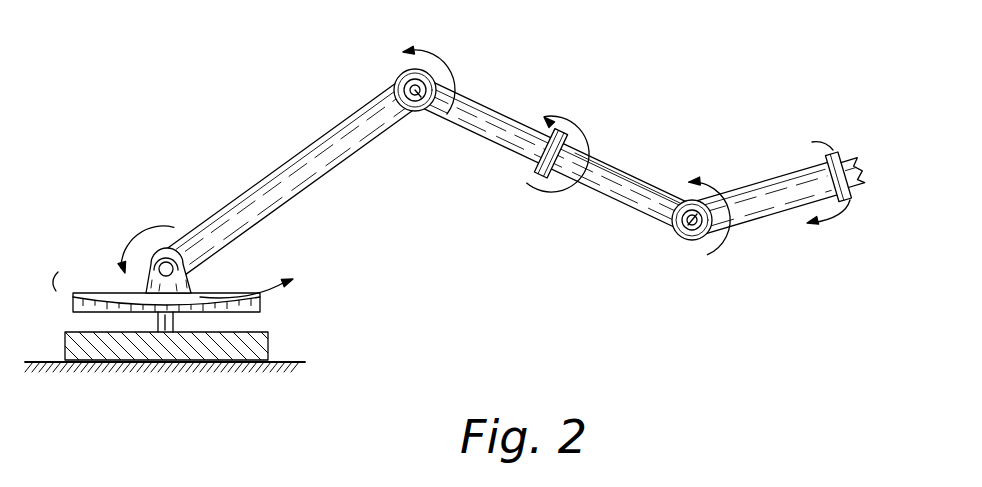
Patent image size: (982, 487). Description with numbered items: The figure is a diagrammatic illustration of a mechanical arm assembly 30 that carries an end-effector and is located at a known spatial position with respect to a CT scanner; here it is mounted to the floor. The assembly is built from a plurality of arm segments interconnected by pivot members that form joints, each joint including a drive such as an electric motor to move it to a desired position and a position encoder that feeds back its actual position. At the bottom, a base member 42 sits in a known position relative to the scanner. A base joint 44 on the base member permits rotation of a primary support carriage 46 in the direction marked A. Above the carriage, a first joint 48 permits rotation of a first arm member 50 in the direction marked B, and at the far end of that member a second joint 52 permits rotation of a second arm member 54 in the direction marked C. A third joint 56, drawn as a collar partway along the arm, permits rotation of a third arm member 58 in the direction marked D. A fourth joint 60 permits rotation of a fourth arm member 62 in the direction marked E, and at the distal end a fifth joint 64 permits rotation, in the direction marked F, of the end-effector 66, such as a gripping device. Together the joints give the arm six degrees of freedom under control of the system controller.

The mechanical arm assembly 30 is at (243, 125).
The base member 42 is at (270, 343).
The base joint 44 is at (175, 323).
The primary support carriage 46 is at (110, 293).
The first joint 48 is at (172, 274).
The first arm member 50 is at (318, 172).
The second joint 52 is at (423, 112).
The second arm member 54 is at (493, 117).
The third joint 56 is at (543, 157).
The third arm member 58 is at (627, 203).
The fourth joint 60 is at (690, 243).
The fourth arm member 62 is at (757, 190).
The fifth joint 64 is at (847, 203).
The end-effector 66 is at (846, 152).